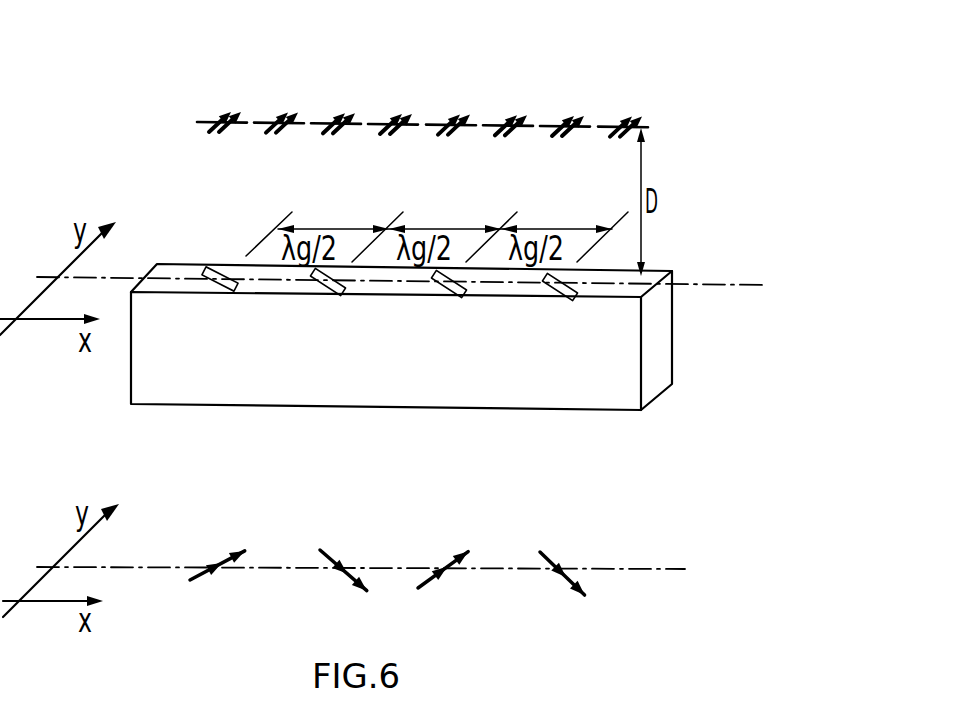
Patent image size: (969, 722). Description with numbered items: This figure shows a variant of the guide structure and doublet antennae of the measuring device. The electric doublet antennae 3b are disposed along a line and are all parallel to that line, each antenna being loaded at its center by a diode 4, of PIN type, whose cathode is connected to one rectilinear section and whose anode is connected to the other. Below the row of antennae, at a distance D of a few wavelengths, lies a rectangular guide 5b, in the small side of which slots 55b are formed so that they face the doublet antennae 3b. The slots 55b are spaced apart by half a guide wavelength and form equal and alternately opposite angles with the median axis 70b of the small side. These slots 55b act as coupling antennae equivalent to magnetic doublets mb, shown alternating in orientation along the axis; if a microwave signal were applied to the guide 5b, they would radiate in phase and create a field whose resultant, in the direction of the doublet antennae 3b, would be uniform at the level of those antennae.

The doublet antennae 3b is at (528, 121).
The diode 4 is at (500, 133).
The rectangular guide 5b is at (656, 278).
The slots 55b is at (447, 300).
The median axis 70b is at (717, 287).
The magnetic doublets mb is at (361, 556).